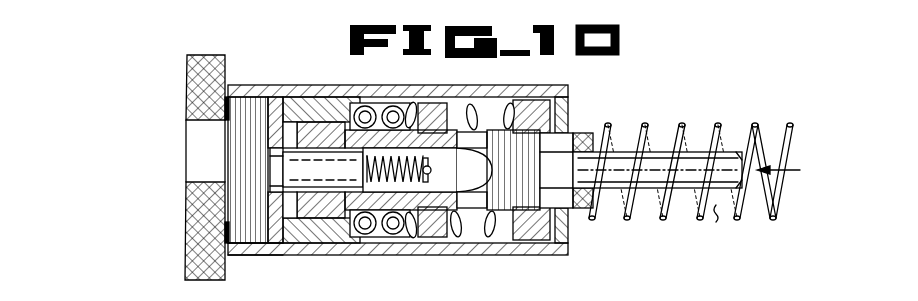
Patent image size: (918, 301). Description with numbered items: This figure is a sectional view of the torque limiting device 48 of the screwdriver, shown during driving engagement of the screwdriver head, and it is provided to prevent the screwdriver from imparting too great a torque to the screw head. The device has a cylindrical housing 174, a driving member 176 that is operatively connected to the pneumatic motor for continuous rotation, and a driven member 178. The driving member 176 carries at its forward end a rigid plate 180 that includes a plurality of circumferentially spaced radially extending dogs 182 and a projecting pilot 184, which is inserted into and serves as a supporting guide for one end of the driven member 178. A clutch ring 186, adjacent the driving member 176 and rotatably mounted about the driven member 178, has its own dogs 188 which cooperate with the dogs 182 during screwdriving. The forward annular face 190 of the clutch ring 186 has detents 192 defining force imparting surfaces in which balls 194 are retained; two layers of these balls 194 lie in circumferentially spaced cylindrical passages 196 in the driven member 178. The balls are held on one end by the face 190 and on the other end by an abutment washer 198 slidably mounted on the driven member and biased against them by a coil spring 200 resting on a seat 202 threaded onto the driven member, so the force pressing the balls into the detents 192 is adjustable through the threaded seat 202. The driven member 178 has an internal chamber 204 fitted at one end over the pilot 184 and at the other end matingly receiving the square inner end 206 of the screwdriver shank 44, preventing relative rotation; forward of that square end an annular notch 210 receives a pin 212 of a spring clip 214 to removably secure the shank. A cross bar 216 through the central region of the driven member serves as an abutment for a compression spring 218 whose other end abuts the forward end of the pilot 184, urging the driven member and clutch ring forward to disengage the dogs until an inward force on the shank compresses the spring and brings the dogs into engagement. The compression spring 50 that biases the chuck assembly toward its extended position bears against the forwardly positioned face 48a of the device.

The screwdriver shank 44 is at (757, 205).
The torque limiting device 48 is at (165, 152).
The forwardly positioned face 48a is at (568, 133).
The compression spring 50 is at (680, 156).
The cylindrical housing 174 is at (233, 85).
The driving member 176 is at (283, 157).
The driven member 178 is at (578, 226).
The plate 180 is at (271, 97).
The dogs 182 is at (278, 243).
The projecting pilot 184 is at (283, 186).
The clutch ring 186 is at (334, 99).
The dogs 188 is at (294, 98).
The forward annular face 190 is at (362, 240).
The detents 192 is at (367, 103).
The balls 194 is at (395, 240).
The cylindrical passages 196 is at (414, 101).
The abutment washer 198 is at (418, 238).
The coil spring 200 is at (468, 216).
The seat 202 is at (568, 113).
The internal chamber 204 is at (370, 170).
The square inner end 206 is at (461, 132).
The annular notch 210 is at (511, 125).
The pin 212 is at (492, 218).
The spring clip 214 is at (522, 240).
The cross bar 216 is at (427, 176).
The compression spring 218 is at (458, 158).